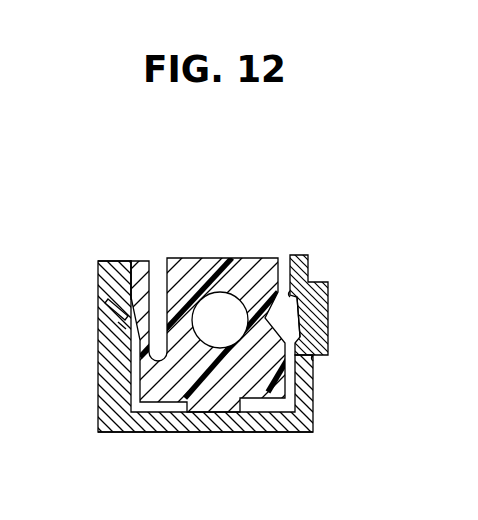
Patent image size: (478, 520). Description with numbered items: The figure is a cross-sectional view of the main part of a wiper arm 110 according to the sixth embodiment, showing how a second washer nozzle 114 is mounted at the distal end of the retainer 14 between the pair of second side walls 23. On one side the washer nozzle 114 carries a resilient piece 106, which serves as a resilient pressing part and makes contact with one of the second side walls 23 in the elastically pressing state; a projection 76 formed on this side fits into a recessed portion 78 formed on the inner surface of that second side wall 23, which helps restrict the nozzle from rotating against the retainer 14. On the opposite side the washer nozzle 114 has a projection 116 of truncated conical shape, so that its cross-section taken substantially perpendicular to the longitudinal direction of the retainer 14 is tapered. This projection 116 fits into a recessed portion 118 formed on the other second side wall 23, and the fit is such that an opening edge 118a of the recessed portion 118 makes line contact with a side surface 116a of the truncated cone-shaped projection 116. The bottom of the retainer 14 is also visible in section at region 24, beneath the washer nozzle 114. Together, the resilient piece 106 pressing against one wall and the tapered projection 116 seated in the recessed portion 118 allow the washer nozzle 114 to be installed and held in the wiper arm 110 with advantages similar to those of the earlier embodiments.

The wiper arm 110 is at (163, 217).
The resilient piece 106 is at (138, 259).
The second washer nozzle 114 is at (223, 257).
The projection 116 is at (328, 286).
The side surface 116a is at (306, 252).
The recessed portion 118 is at (328, 327).
The opening edge 118a is at (300, 290).
The projection 76 is at (112, 307).
The recessed portion 78 is at (122, 324).
The second side wall 23 is at (108, 388).
The retainer 14 is at (178, 432).
The bottom wall 24 is at (230, 433).